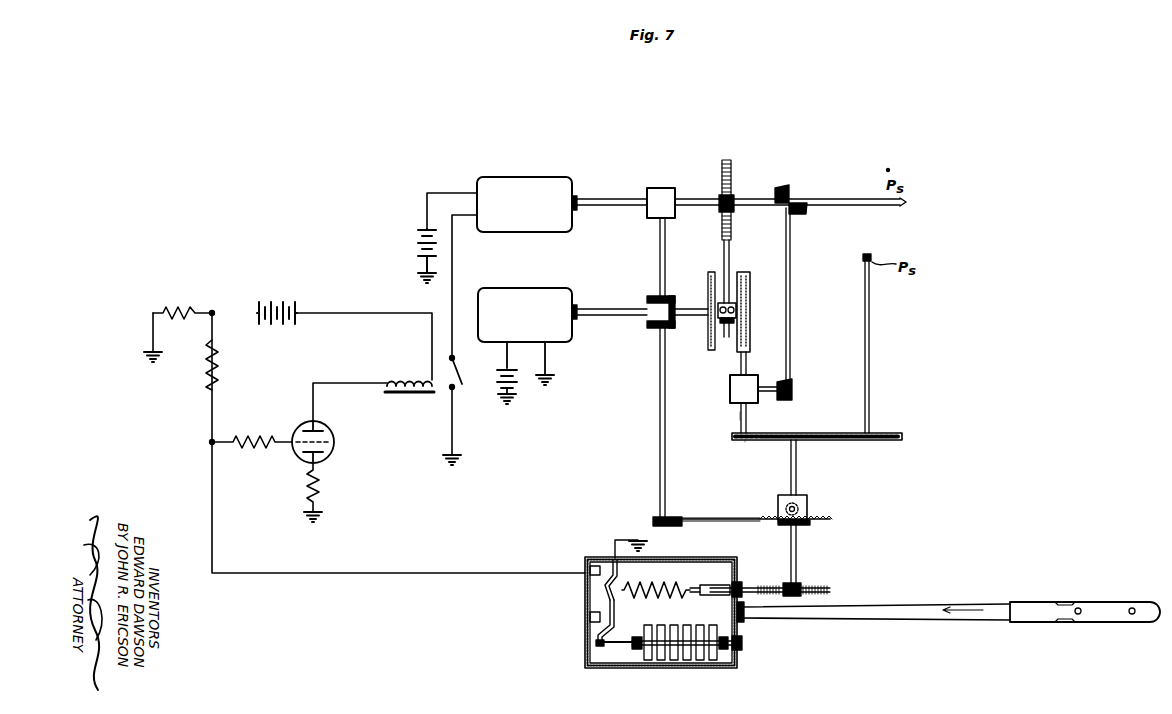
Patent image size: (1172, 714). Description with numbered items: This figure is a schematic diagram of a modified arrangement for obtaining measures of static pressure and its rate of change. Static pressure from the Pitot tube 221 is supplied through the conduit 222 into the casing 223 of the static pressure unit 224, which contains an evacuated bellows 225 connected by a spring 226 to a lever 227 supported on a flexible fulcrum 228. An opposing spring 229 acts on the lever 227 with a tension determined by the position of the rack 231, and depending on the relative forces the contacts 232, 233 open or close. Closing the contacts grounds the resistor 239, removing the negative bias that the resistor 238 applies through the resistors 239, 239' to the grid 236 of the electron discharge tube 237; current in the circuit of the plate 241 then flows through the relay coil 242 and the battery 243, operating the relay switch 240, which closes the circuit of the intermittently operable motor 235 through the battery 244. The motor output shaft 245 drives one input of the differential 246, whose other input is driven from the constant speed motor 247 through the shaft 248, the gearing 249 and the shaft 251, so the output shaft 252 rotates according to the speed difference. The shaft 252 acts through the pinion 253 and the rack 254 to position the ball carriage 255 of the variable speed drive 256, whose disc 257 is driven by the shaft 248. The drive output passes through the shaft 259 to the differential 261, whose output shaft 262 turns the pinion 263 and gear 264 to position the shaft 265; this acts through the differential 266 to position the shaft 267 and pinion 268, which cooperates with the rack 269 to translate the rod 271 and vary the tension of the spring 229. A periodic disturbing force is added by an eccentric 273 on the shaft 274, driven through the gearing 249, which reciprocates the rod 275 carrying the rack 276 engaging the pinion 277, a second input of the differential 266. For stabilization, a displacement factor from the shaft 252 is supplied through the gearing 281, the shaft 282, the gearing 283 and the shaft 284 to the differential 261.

The Pitot tube 221 is at (1078, 601).
The conduit 222 is at (906, 621).
The casing 223 is at (584, 650).
The static pressure unit 224 is at (580, 621).
The evacuated bellows 225 is at (690, 661).
The spring 226 is at (620, 648).
The lever 227 is at (620, 612).
The flexible fulcrum 228 is at (589, 572).
The spring 229 is at (680, 583).
The rack 231 is at (804, 586).
The contact 232 is at (609, 556).
The contact 233 is at (588, 560).
The intermittently operable motor 235 is at (545, 176).
The grid 236 is at (333, 452).
The electron discharge tube 237 is at (328, 430).
The resistor 238 is at (178, 311).
The resistor 239 is at (252, 461).
The resistor 239' is at (236, 365).
The relay switch 240 is at (462, 376).
The plate 241 is at (306, 428).
The relay coil 242 is at (408, 394).
The battery 243 is at (286, 300).
The battery 244 is at (418, 238).
The shaft 245 is at (608, 198).
The differential 246 is at (660, 187).
The constant speed motor 247 is at (545, 289).
The shaft 248 is at (622, 318).
The gearing 249 is at (647, 300).
The shaft 251 is at (658, 262).
The shaft 252 is at (690, 198).
The pinion 253 is at (737, 197).
The rack 254 is at (733, 232).
The ball carriage 255 is at (729, 391).
The variable speed drive 256 is at (708, 345).
The disc 257 is at (712, 272).
The shaft 259 is at (747, 370).
The differential 261 is at (748, 410).
The output shaft 262 is at (738, 420).
The pinion 263 is at (746, 441).
The gear 264 is at (820, 433).
The shaft 265 is at (797, 462).
The differential 266 is at (808, 506).
The shaft 267 is at (798, 553).
The pinion 268 is at (750, 290).
The rack 269 is at (772, 588).
The rod 271 is at (724, 583).
The eccentric 273 is at (676, 516).
The shaft 274 is at (659, 448).
The rod 275 is at (724, 518).
The rack 276 is at (831, 519).
The pinion 277 is at (786, 504).
The gearing 281 is at (795, 204).
The shaft 282 is at (792, 270).
The gearing 283 is at (794, 390).
The shaft 284 is at (788, 376).